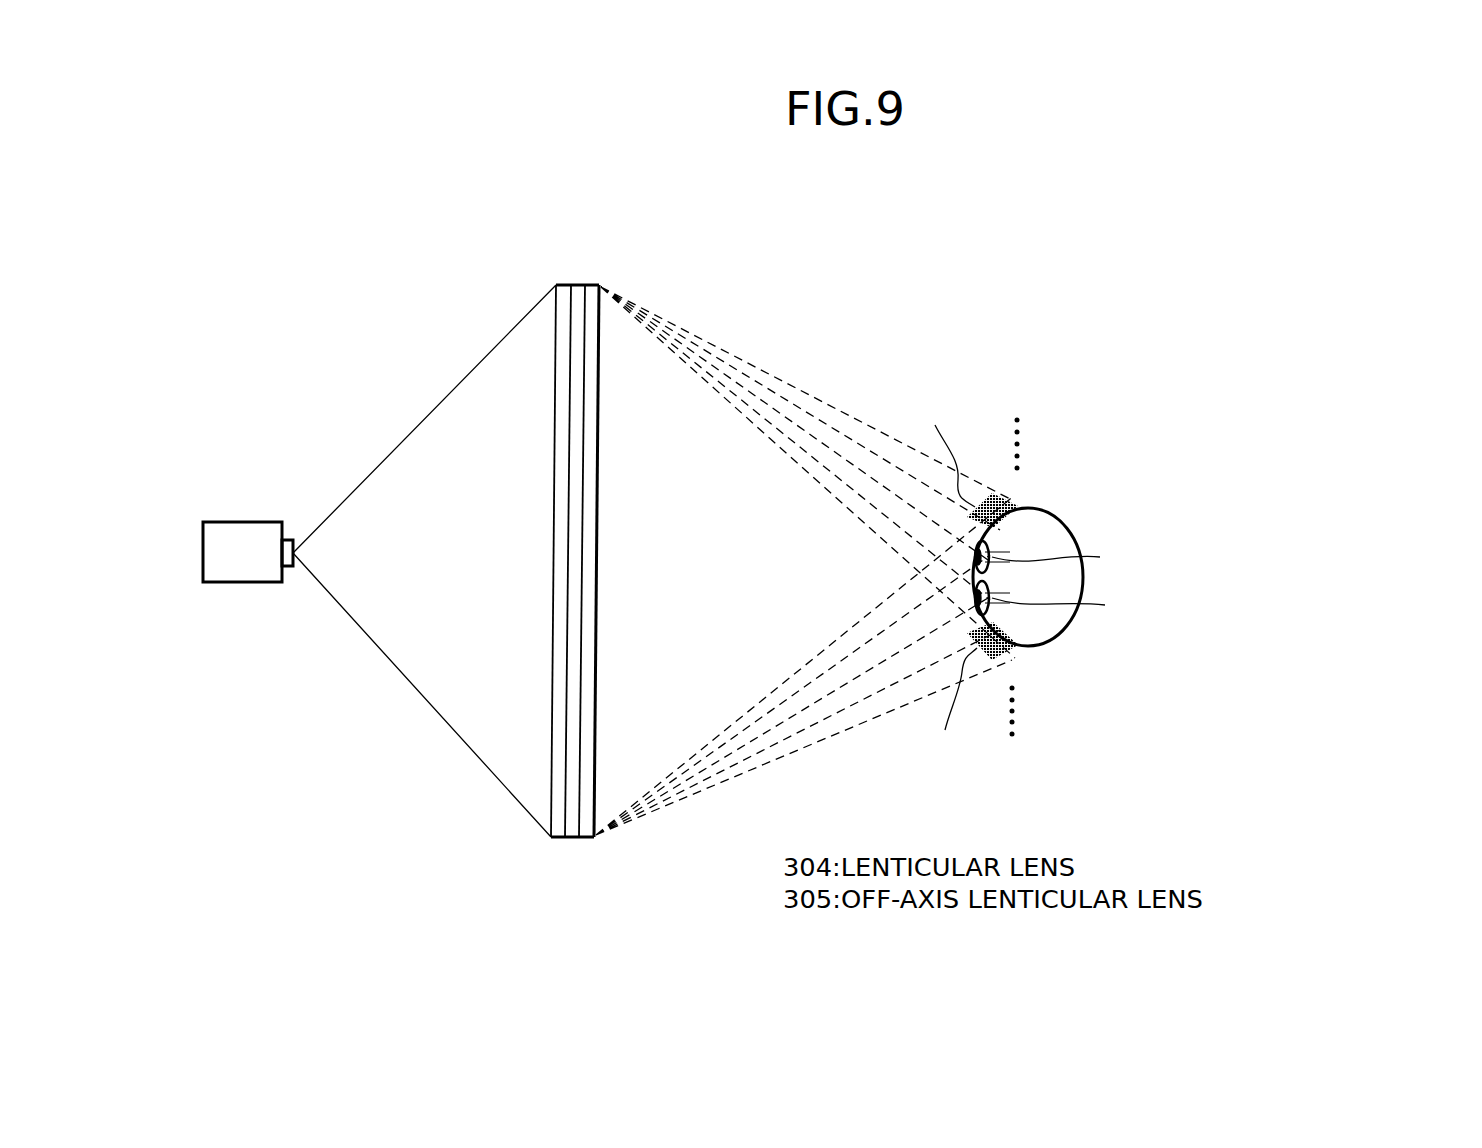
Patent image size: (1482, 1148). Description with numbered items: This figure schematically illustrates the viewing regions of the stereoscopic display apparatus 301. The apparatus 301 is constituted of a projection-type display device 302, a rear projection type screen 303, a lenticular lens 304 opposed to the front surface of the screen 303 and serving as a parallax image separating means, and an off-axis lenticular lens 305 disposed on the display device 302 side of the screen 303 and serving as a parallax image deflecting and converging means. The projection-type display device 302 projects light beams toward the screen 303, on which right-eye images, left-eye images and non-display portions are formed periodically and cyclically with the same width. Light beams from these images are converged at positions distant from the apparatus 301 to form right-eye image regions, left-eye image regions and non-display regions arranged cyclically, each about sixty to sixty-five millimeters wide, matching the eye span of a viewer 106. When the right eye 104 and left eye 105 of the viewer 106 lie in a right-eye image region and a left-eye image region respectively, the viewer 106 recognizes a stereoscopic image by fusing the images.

The stereoscopic display apparatus 301 is at (970, 560).
The projection-type display device 302 is at (240, 522).
The rear projection type screen 303 is at (570, 838).
The lenticular lens 304 is at (597, 656).
The off-axis lenticular lens 305 is at (553, 630).
The right eye 104 is at (990, 543).
The left eye 105 is at (992, 612).
The viewer 106 is at (1129, 607).